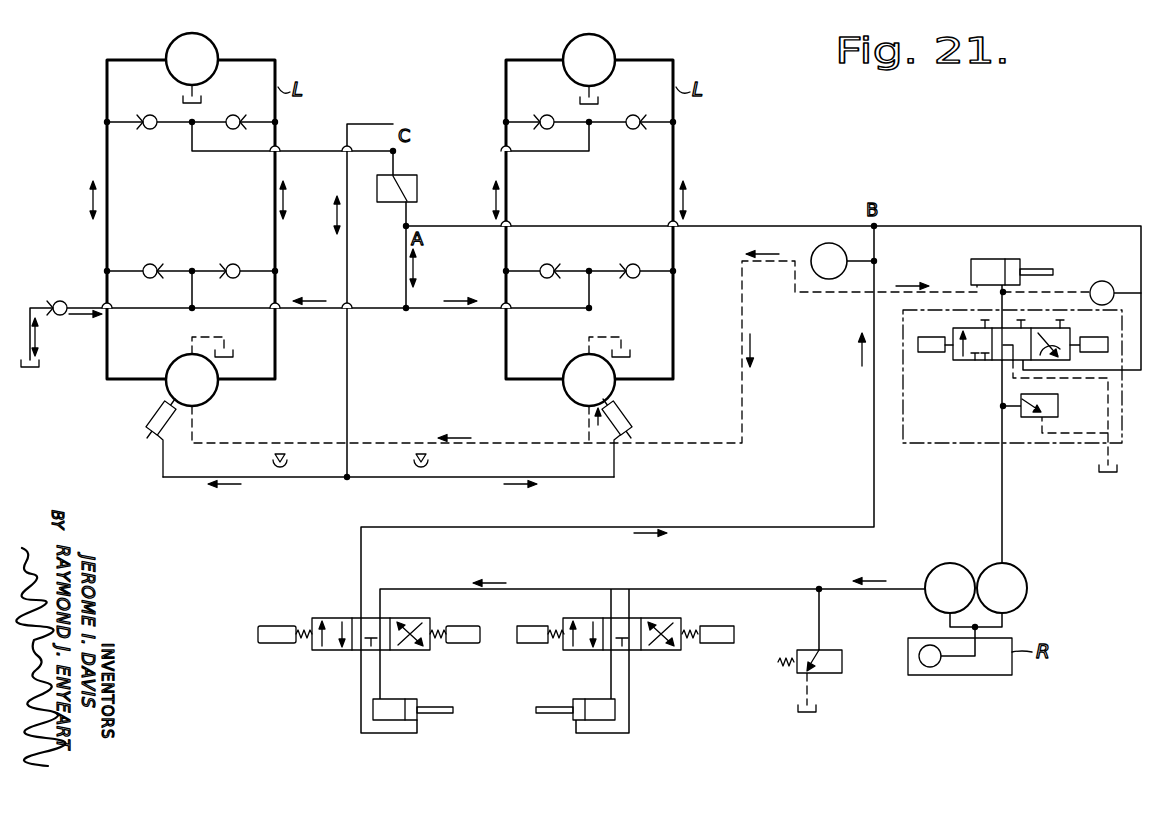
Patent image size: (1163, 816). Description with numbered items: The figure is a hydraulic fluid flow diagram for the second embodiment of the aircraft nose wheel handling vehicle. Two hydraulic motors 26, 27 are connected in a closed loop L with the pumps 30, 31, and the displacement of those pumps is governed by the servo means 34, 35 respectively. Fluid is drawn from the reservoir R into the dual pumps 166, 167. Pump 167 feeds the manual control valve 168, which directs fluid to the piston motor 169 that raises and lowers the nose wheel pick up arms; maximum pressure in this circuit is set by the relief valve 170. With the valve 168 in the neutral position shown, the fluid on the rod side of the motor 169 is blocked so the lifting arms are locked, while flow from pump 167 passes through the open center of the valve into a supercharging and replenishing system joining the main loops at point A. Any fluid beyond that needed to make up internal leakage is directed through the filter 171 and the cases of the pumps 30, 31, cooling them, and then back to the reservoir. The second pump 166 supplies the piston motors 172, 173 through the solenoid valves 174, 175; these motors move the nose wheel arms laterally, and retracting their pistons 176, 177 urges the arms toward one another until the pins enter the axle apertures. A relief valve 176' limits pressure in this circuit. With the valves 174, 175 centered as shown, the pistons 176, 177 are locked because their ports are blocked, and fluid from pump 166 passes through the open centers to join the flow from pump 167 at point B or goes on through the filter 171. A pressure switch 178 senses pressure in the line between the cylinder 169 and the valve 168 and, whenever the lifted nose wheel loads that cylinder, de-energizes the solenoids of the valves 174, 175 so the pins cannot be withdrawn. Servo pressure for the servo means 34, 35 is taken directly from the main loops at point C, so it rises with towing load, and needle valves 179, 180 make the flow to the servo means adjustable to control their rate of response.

The hydraulic motor 26 is at (205, 48).
The hydraulic motor 27 is at (602, 50).
The pump 30 is at (176, 388).
The pump 31 is at (575, 390).
The servo means 34 is at (143, 446).
The servo means 35 is at (634, 422).
The pump 166 is at (946, 566).
The pump 167 is at (1010, 572).
The manual control valve 168 is at (1068, 362).
The piston motor 169 is at (988, 262).
The relief valve 170 is at (1056, 407).
The filter 171 is at (822, 251).
The piston motor 172 is at (386, 722).
The piston motor 173 is at (594, 722).
The solenoid valve 174 is at (412, 651).
The solenoid valve 175 is at (579, 651).
The piston 176 is at (450, 695).
The relief valve 176' is at (837, 664).
The piston 177 is at (548, 706).
The pressure switch 178 is at (1119, 276).
The needle valve 179 is at (280, 487).
The needle valve 180 is at (420, 487).